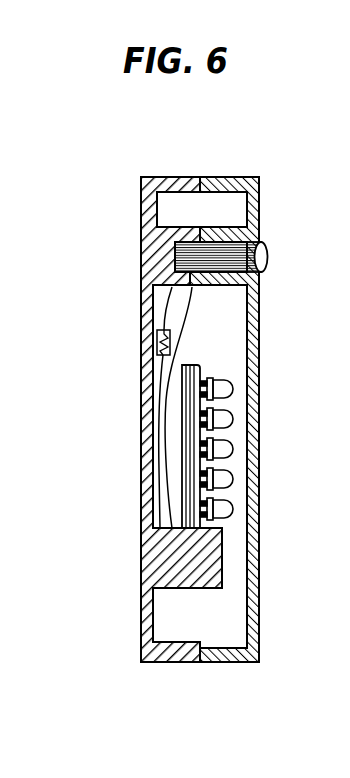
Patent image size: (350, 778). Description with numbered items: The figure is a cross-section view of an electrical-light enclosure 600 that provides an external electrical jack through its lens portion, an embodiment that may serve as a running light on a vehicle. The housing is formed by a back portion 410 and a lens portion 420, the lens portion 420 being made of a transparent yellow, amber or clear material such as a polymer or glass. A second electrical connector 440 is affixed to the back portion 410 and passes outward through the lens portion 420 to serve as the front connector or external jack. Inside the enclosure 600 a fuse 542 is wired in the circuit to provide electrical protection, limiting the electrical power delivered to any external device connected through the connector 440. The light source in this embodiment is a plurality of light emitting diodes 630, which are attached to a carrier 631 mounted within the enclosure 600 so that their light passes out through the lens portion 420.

The enclosure 600 is at (265, 163).
The back portion 410 is at (152, 178).
The lens portion 420 is at (262, 196).
The second electrical connector 440 is at (265, 271).
The fuse 542 is at (158, 353).
The carrier 631 is at (200, 366).
The light emitting diodes 630 is at (233, 448).